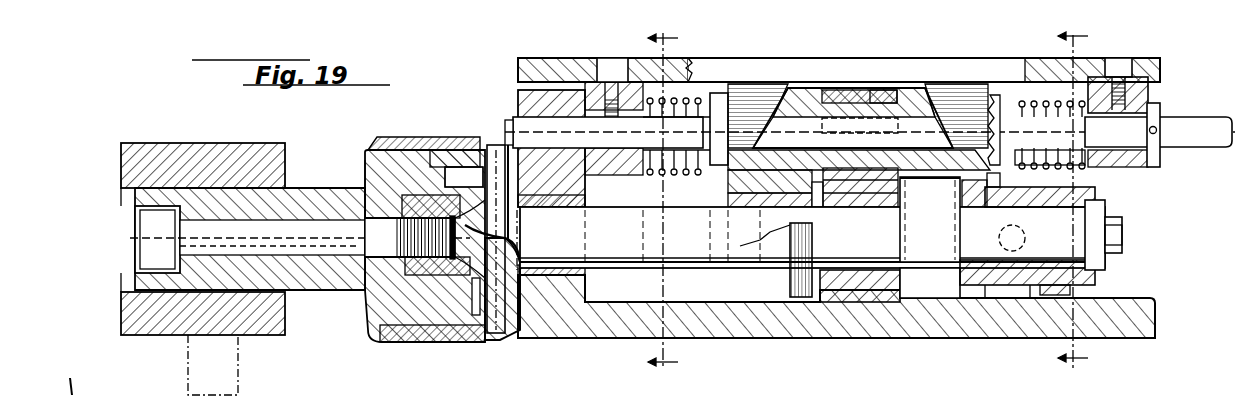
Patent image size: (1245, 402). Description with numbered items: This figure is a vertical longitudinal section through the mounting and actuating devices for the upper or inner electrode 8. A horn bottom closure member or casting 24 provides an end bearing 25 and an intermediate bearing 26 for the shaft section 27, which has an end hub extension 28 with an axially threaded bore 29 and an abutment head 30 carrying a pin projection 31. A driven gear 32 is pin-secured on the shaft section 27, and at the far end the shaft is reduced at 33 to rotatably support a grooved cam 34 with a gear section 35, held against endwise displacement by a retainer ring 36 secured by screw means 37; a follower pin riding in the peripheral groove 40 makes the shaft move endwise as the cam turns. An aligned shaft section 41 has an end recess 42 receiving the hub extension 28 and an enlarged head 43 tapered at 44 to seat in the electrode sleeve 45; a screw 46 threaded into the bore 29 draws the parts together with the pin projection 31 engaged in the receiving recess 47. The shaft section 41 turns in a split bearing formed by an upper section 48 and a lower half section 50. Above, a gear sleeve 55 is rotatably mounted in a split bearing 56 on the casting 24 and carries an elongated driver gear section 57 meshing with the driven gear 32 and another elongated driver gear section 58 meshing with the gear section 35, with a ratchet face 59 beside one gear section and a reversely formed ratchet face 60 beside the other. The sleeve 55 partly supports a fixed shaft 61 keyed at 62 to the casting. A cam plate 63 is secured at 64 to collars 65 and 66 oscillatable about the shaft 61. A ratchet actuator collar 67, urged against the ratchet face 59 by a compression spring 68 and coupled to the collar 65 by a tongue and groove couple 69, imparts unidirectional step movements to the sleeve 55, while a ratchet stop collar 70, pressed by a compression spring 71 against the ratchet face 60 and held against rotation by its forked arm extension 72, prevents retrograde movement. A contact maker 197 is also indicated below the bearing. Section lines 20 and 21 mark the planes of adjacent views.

The upper or inner electrode 8 is at (388, 344).
The section line 20- 20 is at (662, 200).
The section line 21- 21 is at (1076, 195).
The horn bottom closure member or casting 24 is at (632, 330).
The end bearing 25 is at (510, 312).
The intermediate bearing 26 is at (862, 296).
The shaft section 27 is at (655, 258).
The end hub extension 28 is at (380, 310).
The axially threaded bore 29 is at (415, 136).
The abutment head 30 is at (493, 223).
The pin projection 31 is at (463, 165).
The driven gear 32 is at (800, 300).
The reduced portion of shaft section 33 is at (930, 286).
The grooved cam 34 is at (995, 300).
The gear section 35 is at (972, 290).
The retainer ring 36 is at (1118, 213).
The screw means 37 is at (1123, 238).
The peripheral groove 40 is at (1044, 297).
The shaft section 41 is at (335, 278).
The end recess 42 is at (410, 280).
The enlarged head 43 is at (378, 152).
The taper 44 is at (398, 158).
The electrode sleeve 45 is at (428, 343).
The screw 46 is at (185, 228).
The receiving recess 47 is at (453, 148).
The upper section of split bearing 48 is at (128, 165).
The lower half section of split bearing 50 is at (140, 310).
The gear sleeve 55 is at (846, 94).
The split bearing 56 is at (872, 92).
The elongated driver gear section 57 is at (800, 86).
The elongated driver gear section 58 is at (963, 84).
The ratchet face 59 is at (729, 93).
The ratchet face 60 is at (930, 219).
The fixed shaft 61 is at (1205, 125).
The key 62 is at (528, 98).
The cam plate 63 is at (768, 82).
The securing means 64 is at (611, 78).
The collar 65 is at (630, 176).
The collar 66 is at (1160, 166).
The ratchet actuator collar 67 is at (686, 178).
The compression spring 68 is at (668, 178).
The tongue and groove couple 69 is at (870, 133).
The ratchet stop collar 70 is at (1031, 108).
The compression spring 71 is at (1066, 167).
The forked arm extension 72 is at (1002, 124).
The contact maker 197 is at (188, 362).